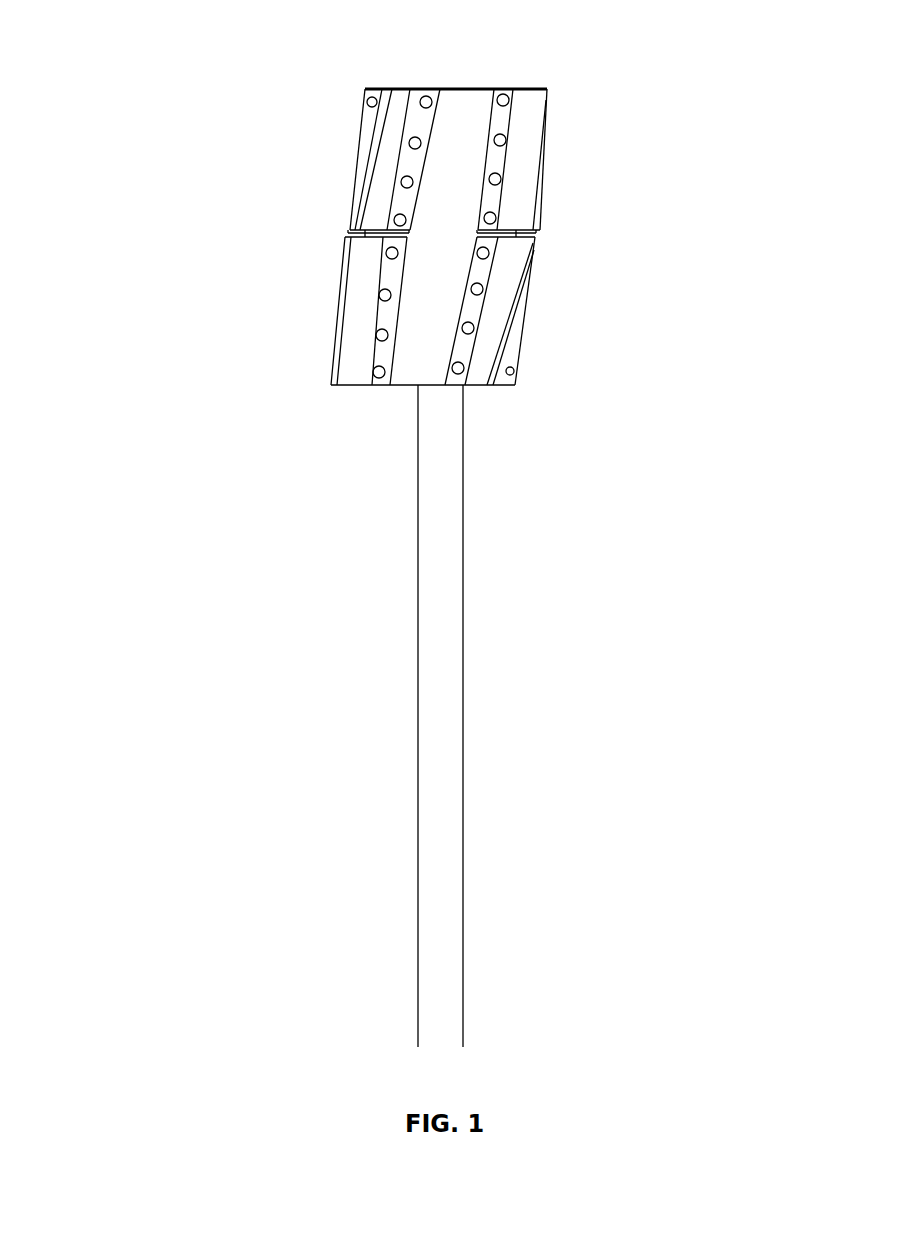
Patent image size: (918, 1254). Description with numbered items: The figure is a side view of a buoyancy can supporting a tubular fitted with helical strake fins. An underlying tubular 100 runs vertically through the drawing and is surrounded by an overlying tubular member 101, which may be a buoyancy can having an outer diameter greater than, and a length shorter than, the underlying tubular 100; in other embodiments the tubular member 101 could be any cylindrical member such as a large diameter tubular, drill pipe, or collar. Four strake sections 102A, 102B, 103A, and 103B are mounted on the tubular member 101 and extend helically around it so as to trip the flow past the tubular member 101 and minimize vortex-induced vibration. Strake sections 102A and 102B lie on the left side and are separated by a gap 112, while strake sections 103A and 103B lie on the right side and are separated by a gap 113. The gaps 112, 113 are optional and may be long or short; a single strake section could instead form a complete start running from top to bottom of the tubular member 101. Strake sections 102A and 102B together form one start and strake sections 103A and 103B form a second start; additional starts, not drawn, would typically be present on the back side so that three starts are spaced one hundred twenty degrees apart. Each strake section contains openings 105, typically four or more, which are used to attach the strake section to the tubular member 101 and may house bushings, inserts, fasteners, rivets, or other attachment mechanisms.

The underlying tubular 100 is at (417, 590).
The tubular member 101 is at (457, 102).
The strake section 102A is at (345, 215).
The strake section 102B is at (335, 287).
The strake section 103A is at (543, 207).
The strake section 103B is at (538, 248).
The openings 105 is at (385, 212).
The gap 112 is at (345, 233).
The gap 113 is at (543, 233).